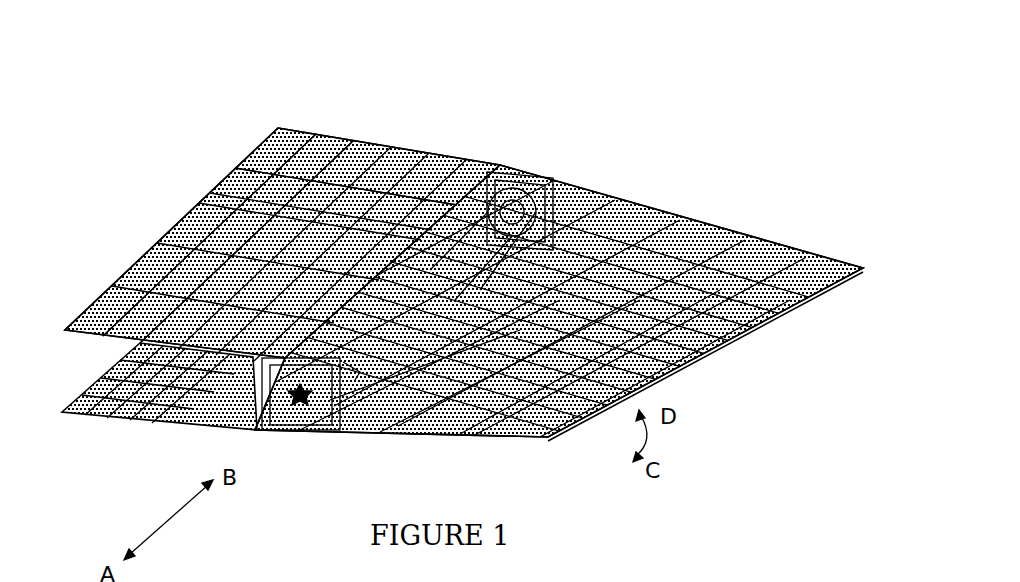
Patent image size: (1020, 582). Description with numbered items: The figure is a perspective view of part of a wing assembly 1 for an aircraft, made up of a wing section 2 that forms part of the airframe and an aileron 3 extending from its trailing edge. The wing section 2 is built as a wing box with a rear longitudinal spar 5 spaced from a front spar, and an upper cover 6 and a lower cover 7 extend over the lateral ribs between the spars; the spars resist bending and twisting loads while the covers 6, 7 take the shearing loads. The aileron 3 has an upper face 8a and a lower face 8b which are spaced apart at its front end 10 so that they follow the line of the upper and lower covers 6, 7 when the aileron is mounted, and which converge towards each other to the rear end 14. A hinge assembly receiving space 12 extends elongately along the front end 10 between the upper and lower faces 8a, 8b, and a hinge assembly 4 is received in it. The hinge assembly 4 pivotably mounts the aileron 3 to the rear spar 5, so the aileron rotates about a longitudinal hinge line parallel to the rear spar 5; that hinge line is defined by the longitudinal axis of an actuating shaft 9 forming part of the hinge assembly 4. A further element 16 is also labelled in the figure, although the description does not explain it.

The wing assembly 1 is at (560, 85).
The wing section 2 is at (348, 145).
The aileron 3 is at (677, 210).
The hinge assembly 4 is at (297, 420).
The rear longitudinal spar 5 is at (220, 417).
The upper cover 6 is at (177, 233).
The lower cover 7 is at (117, 417).
The upper face 8a is at (753, 233).
The lower face 8b is at (470, 437).
The actuating shaft 9 is at (343, 362).
The front end 10 is at (463, 200).
The hinge assembly receiving space 12 is at (327, 420).
The rear end 14 is at (500, 163).
The element 16 is at (704, 572).